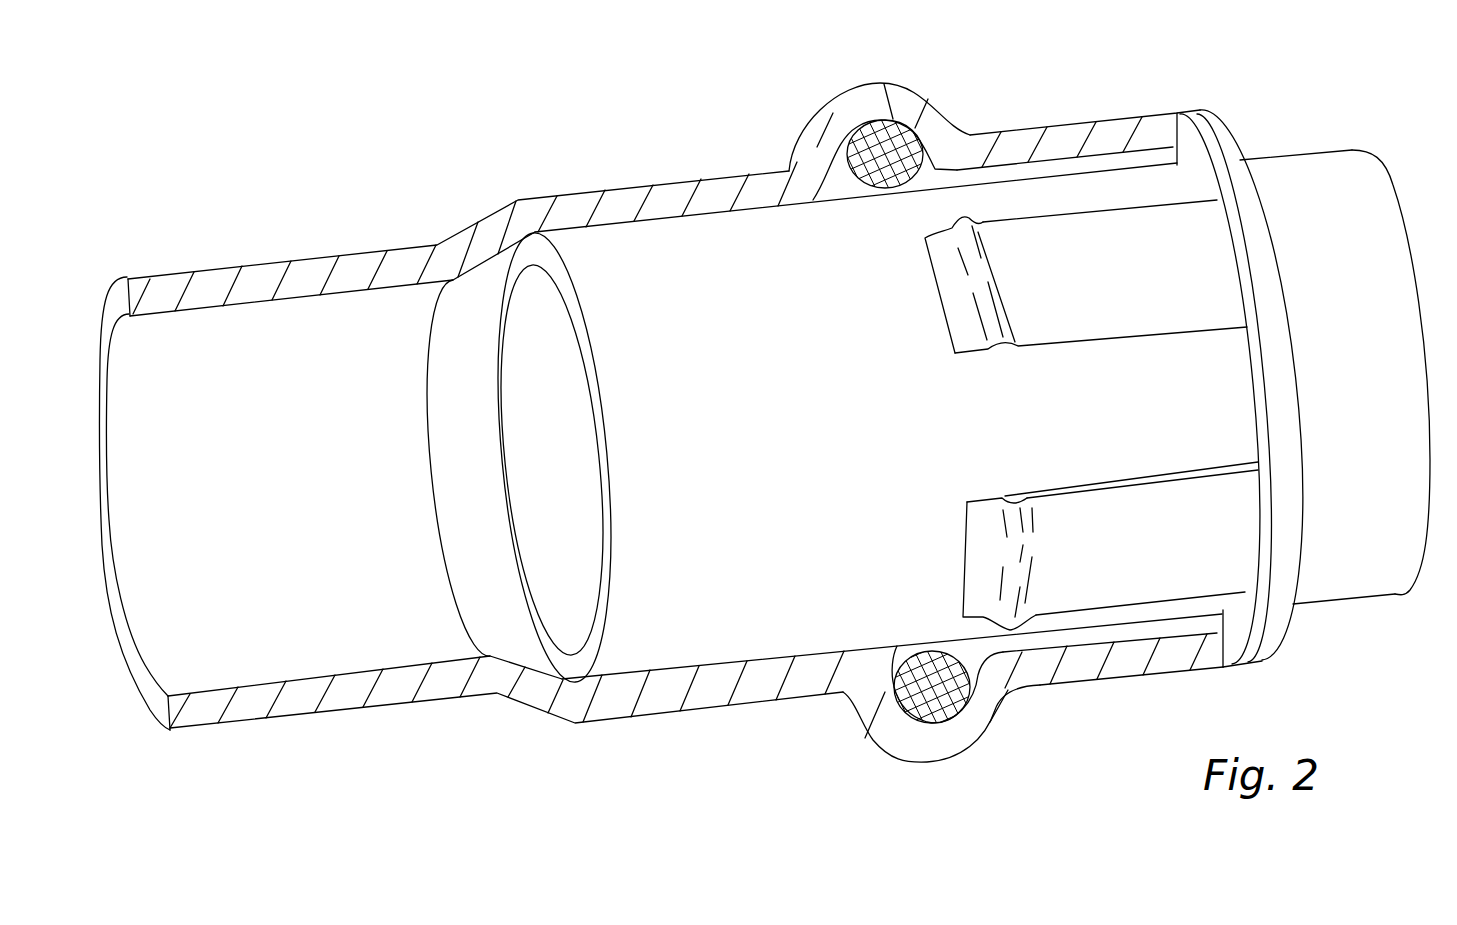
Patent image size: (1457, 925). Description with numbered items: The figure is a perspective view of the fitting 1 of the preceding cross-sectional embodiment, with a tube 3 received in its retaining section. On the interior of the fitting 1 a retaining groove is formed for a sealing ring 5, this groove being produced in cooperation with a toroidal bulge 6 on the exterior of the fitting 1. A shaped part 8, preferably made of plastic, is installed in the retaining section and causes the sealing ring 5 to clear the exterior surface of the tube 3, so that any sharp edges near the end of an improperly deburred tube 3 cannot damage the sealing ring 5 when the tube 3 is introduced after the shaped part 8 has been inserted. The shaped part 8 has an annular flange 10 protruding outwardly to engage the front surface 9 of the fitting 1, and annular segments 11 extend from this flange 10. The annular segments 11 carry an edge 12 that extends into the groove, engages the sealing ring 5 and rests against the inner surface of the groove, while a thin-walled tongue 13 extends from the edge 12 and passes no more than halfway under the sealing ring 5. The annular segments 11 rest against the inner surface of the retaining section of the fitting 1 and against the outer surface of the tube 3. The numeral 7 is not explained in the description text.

The fitting 1 is at (631, 184).
The tube 3 is at (713, 250).
The sealing ring 5 is at (923, 100).
The toroidal bulge 6 is at (960, 727).
The narrow tube end portion 7 is at (477, 240).
The shaped part 8 is at (1138, 148).
The front surface 9 is at (1217, 650).
The annular flange 10 is at (1273, 648).
The annular segments 11 is at (1100, 165).
The edge 12 is at (983, 226).
The thin-walled tongue 13 is at (963, 333).